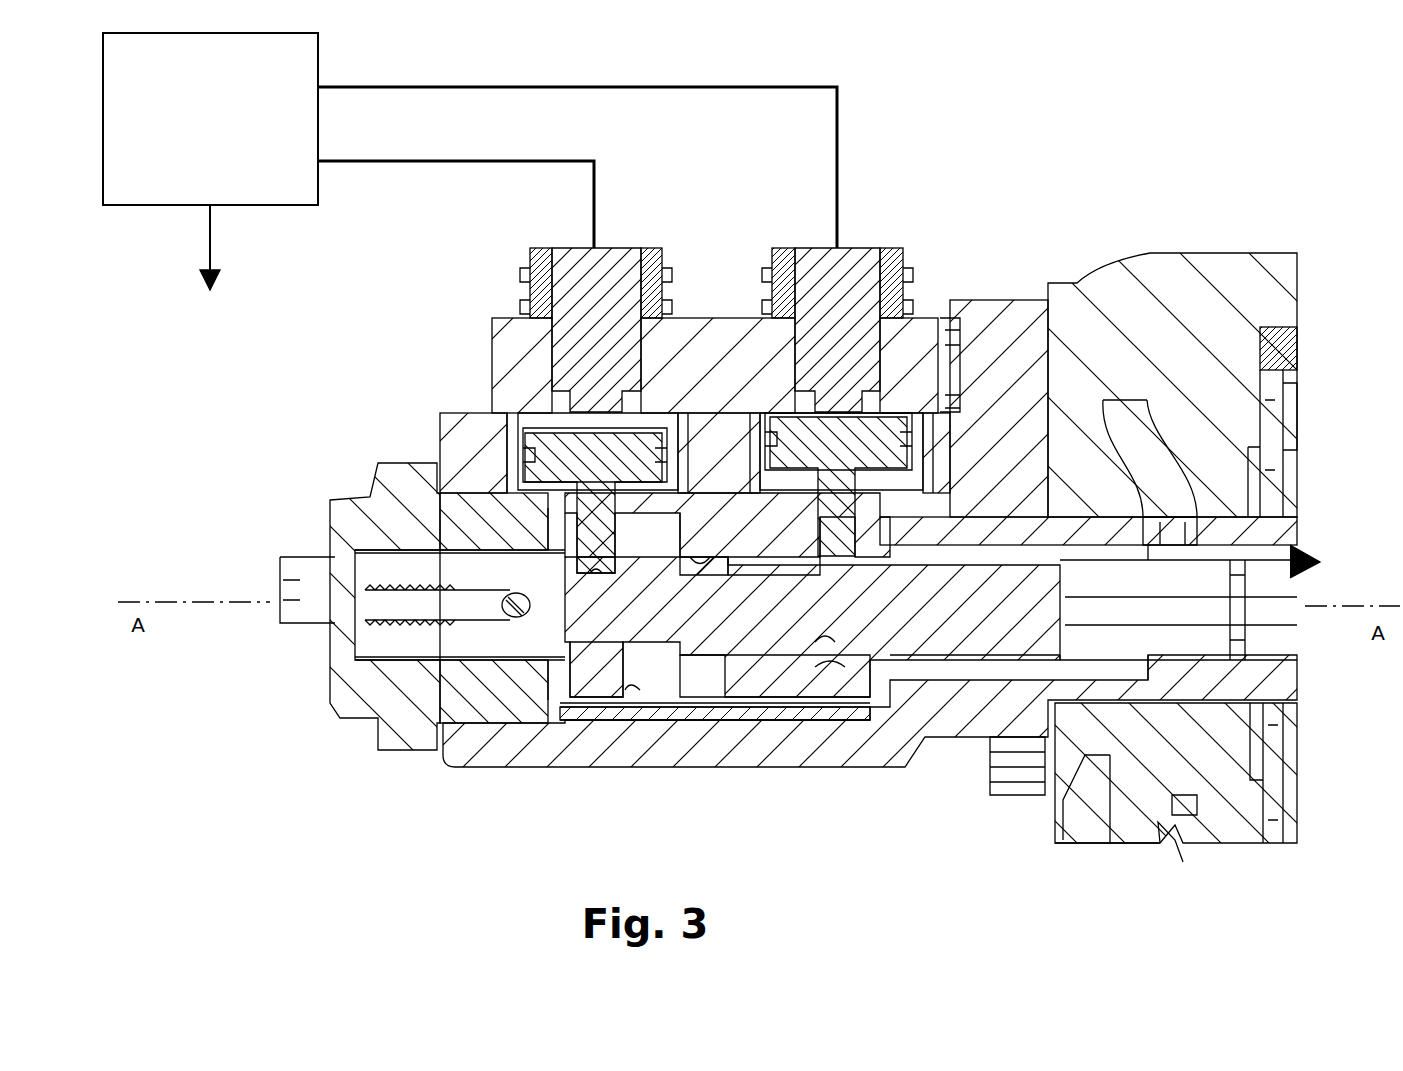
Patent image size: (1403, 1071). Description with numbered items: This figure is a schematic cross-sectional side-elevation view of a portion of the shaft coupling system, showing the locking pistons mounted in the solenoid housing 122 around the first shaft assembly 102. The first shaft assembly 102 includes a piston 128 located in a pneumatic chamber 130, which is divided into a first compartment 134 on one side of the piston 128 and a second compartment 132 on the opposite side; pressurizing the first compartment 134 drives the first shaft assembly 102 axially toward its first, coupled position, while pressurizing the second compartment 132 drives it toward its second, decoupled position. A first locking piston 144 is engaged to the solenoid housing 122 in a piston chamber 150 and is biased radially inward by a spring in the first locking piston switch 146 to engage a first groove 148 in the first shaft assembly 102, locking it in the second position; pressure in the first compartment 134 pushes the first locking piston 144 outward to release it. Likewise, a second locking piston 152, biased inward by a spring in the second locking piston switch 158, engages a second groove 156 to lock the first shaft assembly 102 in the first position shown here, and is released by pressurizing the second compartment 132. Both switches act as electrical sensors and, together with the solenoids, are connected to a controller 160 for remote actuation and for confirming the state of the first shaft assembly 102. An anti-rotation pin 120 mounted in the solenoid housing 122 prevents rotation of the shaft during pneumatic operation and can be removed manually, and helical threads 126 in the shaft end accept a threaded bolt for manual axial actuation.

The controller 160 is at (470, 194).
The second locking piston switch 158 is at (612, 258).
The first locking piston switch 146 is at (868, 258).
The solenoid housing 122 is at (440, 398).
The second locking piston 152 is at (648, 440).
The piston chamber 150 is at (540, 430).
The first locking piston 144 is at (790, 425).
The first shaft assembly 102 is at (880, 557).
The first groove 148 is at (715, 583).
The piston 128 is at (690, 556).
The second groove 156 is at (615, 575).
The second compartment 132 is at (605, 690).
The first compartment 134 is at (728, 680).
The pneumatic chamber 130 is at (822, 698).
The helical threads 126 is at (345, 540).
The anti-rotation pin 120 is at (515, 618).